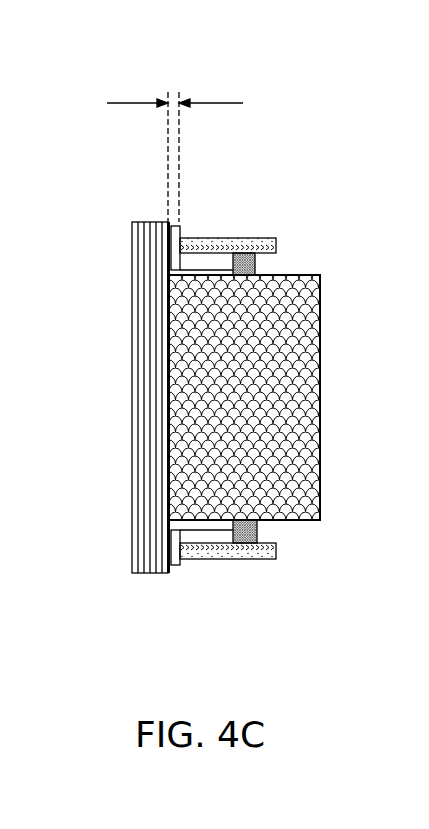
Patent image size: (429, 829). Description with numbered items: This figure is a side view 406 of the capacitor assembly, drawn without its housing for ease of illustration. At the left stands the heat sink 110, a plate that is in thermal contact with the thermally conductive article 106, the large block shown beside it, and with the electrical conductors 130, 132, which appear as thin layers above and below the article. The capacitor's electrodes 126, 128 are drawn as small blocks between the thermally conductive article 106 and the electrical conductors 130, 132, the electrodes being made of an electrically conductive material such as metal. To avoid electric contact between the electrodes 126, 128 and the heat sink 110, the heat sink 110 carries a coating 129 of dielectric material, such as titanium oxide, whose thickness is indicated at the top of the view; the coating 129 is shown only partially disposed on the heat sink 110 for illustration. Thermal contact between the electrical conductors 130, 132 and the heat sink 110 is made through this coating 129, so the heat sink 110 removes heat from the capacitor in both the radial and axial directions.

The side view 406 is at (350, 108).
The heat sink 110 is at (153, 442).
The coating 129 is at (178, 225).
The electrical conductor 130 is at (258, 240).
The electrical conductor 132 is at (277, 548).
The electrode 126 is at (256, 265).
The electrode 128 is at (258, 530).
The thermally conductive article 106 is at (307, 388).